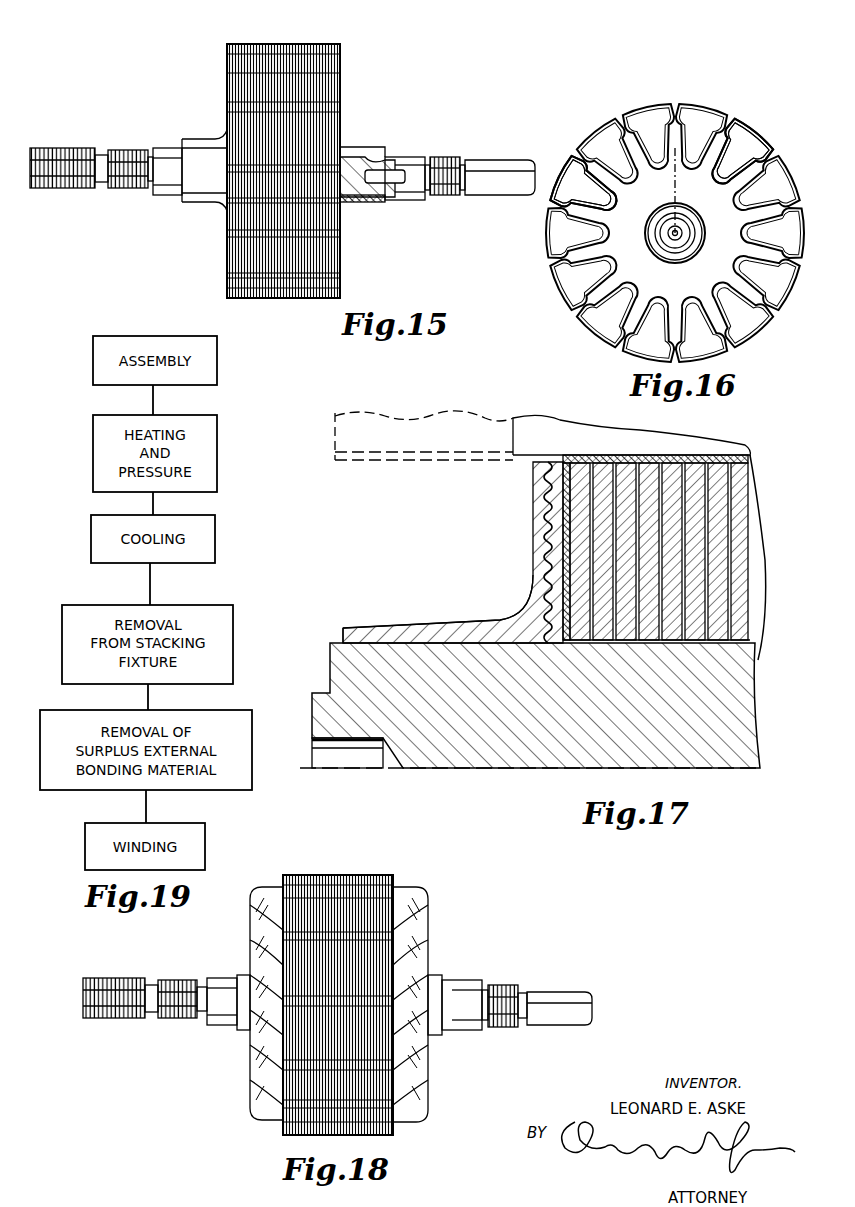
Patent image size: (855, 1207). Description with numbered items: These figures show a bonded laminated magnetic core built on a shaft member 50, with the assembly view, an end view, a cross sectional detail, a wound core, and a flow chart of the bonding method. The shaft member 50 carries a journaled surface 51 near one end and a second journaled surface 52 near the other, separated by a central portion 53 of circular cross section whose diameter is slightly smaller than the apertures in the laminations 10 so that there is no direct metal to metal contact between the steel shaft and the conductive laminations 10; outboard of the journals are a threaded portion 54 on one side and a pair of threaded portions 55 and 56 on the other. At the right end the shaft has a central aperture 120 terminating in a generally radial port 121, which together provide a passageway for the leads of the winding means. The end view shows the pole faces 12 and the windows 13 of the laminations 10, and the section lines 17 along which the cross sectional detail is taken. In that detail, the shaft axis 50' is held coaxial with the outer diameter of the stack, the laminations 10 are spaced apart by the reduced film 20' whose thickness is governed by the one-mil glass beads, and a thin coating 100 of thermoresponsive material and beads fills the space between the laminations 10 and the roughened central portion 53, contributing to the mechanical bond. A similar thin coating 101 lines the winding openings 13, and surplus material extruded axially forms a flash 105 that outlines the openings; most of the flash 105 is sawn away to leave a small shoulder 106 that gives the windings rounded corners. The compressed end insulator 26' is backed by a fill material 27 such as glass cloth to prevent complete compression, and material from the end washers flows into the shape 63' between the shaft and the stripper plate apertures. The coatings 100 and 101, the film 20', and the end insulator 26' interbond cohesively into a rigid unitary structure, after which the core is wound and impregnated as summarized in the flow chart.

In FIG. 17, the laminations 10 is at (615, 650).
In FIG. 16, the pole faces 12 is at (584, 140).
In FIG. 16, the windows 13 is at (583, 285).
In FIG. 16, the section lines 17 is at (676, 155).
In FIG. 17, the spacing between the laminations 20' is at (656, 570).
In FIG. 16, the compressed end insulator 26' is at (661, 233).
In FIG. 17, the compressed end insulator 26' is at (453, 552).
In FIG. 17, the backing or fill material 27 is at (533, 522).
In FIG. 15, the shaft member 50 is at (287, 202).
In FIG. 17, the shaft member 50 is at (530, 723).
In FIG. 18, the shaft member 50 is at (555, 993).
In FIG. 17, the shaft axis 50' is at (347, 775).
In FIG. 15, the journaled surface 51 is at (408, 201).
In FIG. 18, the journaled surface 51 is at (463, 980).
In FIG. 15, the second journaled surface 52 is at (172, 196).
In FIG. 18, the second journaled surface 52 is at (223, 1027).
In FIG. 17, the central portion 53 is at (333, 643).
In FIG. 15, the threaded portion 54 is at (453, 157).
In FIG. 18, the threaded portion 54 is at (503, 1027).
In FIG. 15, the threaded portion 55 is at (131, 150).
In FIG. 18, the threaded portion 55 is at (177, 1019).
In FIG. 15, the threaded portion 56 is at (61, 148).
In FIG. 18, the threaded portion 56 is at (113, 1019).
In FIG. 15, the thermoresponsive material 63' is at (285, 179).
In FIG. 17, the thermoresponsive material 63' is at (438, 601).
In FIG. 17, the thin coating 100 is at (740, 652).
In FIG. 17, the thin coating 101 is at (602, 457).
In FIG. 17, the flash 105 is at (385, 460).
In FIG. 16, the shoulder 106 is at (568, 226).
In FIG. 17, the shoulder 106 is at (523, 460).
In FIG. 15, the central aperture 120 is at (396, 171).
In FIG. 15, the radial port 121 is at (353, 203).